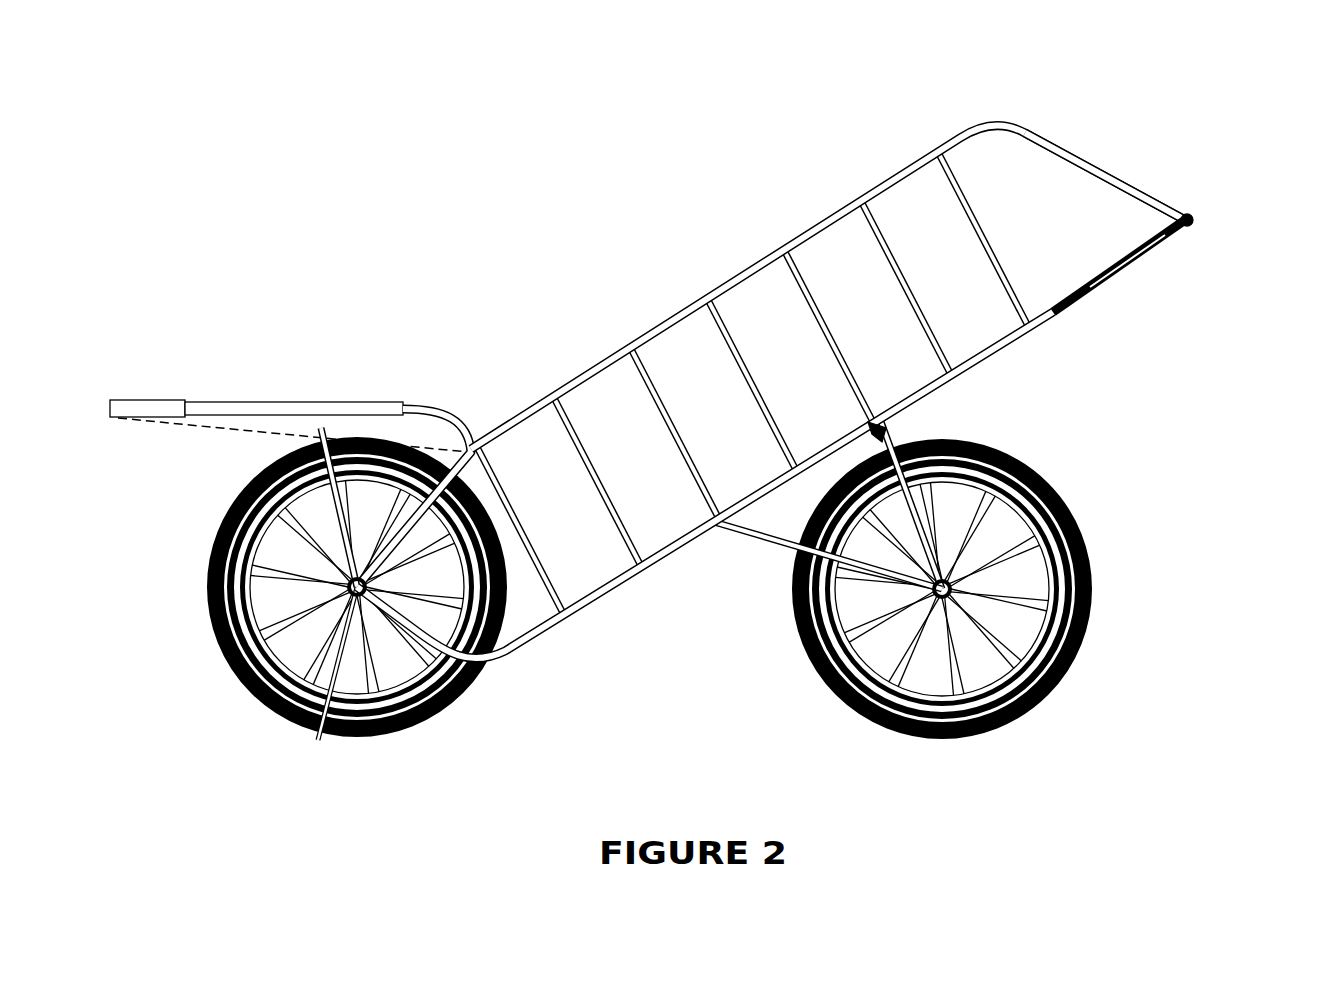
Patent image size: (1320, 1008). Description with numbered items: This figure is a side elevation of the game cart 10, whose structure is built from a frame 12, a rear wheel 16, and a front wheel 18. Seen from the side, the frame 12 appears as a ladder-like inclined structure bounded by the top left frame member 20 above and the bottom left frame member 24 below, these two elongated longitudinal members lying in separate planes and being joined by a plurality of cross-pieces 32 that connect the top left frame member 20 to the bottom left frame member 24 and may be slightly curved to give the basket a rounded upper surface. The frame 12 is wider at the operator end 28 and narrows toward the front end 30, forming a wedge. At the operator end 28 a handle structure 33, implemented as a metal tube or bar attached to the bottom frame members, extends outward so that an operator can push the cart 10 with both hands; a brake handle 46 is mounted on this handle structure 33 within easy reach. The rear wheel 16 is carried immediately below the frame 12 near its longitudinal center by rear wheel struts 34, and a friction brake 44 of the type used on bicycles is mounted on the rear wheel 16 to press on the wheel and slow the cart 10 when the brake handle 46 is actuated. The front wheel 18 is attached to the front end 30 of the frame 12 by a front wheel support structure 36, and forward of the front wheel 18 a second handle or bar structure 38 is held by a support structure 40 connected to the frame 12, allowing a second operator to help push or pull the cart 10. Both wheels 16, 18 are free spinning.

The game cart 10 is at (693, 464).
The frame 12 is at (771, 396).
The rear wheel 16 is at (1080, 650).
The front wheel 18 is at (395, 735).
The top left frame member 20 is at (773, 253).
The bottom left frame member 24 is at (610, 593).
The operator end 28 is at (1203, 200).
The front end 30 is at (268, 432).
The cross-pieces 32 is at (823, 210).
The handle structure 33 is at (1195, 222).
The rear wheel struts 34 is at (753, 547).
The front wheel support structure 36 is at (317, 737).
The second handle or bar structure 38 is at (153, 401).
The support structure 40 is at (293, 403).
The friction brake 44 is at (887, 427).
The brake handle 46 is at (1163, 257).